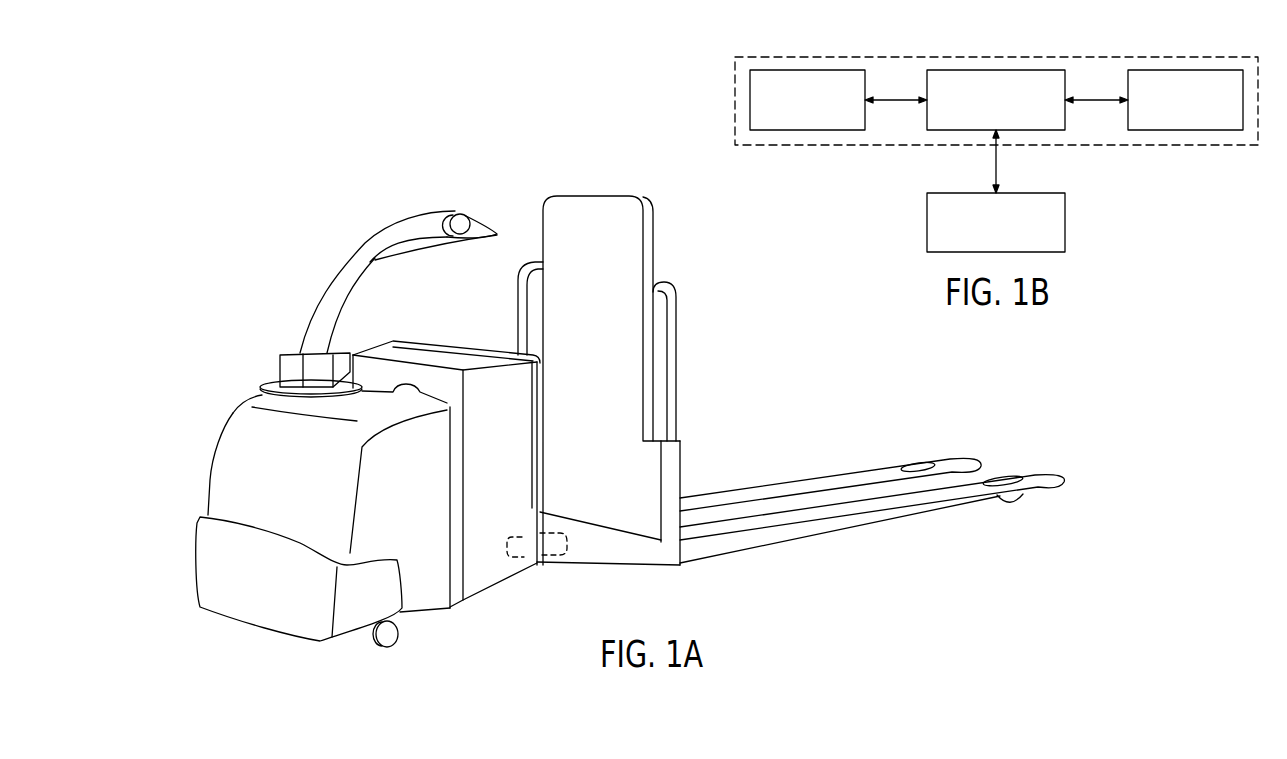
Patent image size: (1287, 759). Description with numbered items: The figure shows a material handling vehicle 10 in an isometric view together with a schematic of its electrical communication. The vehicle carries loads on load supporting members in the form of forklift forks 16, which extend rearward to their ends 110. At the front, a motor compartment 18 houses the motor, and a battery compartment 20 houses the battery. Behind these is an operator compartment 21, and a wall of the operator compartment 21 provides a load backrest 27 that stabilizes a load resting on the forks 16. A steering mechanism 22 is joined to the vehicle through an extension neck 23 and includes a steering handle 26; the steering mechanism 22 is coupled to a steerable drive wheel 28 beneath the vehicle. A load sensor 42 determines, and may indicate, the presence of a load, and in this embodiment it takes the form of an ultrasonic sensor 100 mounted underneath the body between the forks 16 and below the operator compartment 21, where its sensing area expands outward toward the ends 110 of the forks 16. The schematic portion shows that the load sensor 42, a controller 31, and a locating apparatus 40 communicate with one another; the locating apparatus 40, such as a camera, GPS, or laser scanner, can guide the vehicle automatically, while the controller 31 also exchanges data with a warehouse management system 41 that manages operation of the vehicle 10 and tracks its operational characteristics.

In FIG. 1A, the material handling vehicle 10 is at (362, 136).
In FIG. 1B, the material handling vehicle 10 is at (884, 57).
In FIG. 1A, the forklift forks 16 is at (945, 462).
In FIG. 1A, the motor compartment 18 is at (232, 445).
In FIG. 1A, the battery compartment 20 is at (494, 588).
In FIG. 1A, the operator compartment 21 is at (580, 533).
In FIG. 1A, the steering mechanism 22 is at (470, 207).
In FIG. 1A, the extension neck 23 is at (337, 286).
In FIG. 1A, the steering handle 26 is at (494, 236).
In FIG. 1A, the load backrest 27 is at (656, 266).
In FIG. 1A, the steerable drive wheel 28 is at (388, 636).
In FIG. 1B, the controller 31 is at (1002, 69).
In FIG. 1B, the locating apparatus 40 is at (1190, 69).
In FIG. 1B, the warehouse management system (WMS) 41 is at (1066, 222).
In FIG. 1A, the load sensor 42 is at (545, 572).
In FIG. 1B, the load sensor 42 is at (812, 69).
In FIG. 1A, the ultrasonic sensor 100 is at (517, 535).
In FIG. 1A, the ends of the load supporting members 110 is at (978, 442).